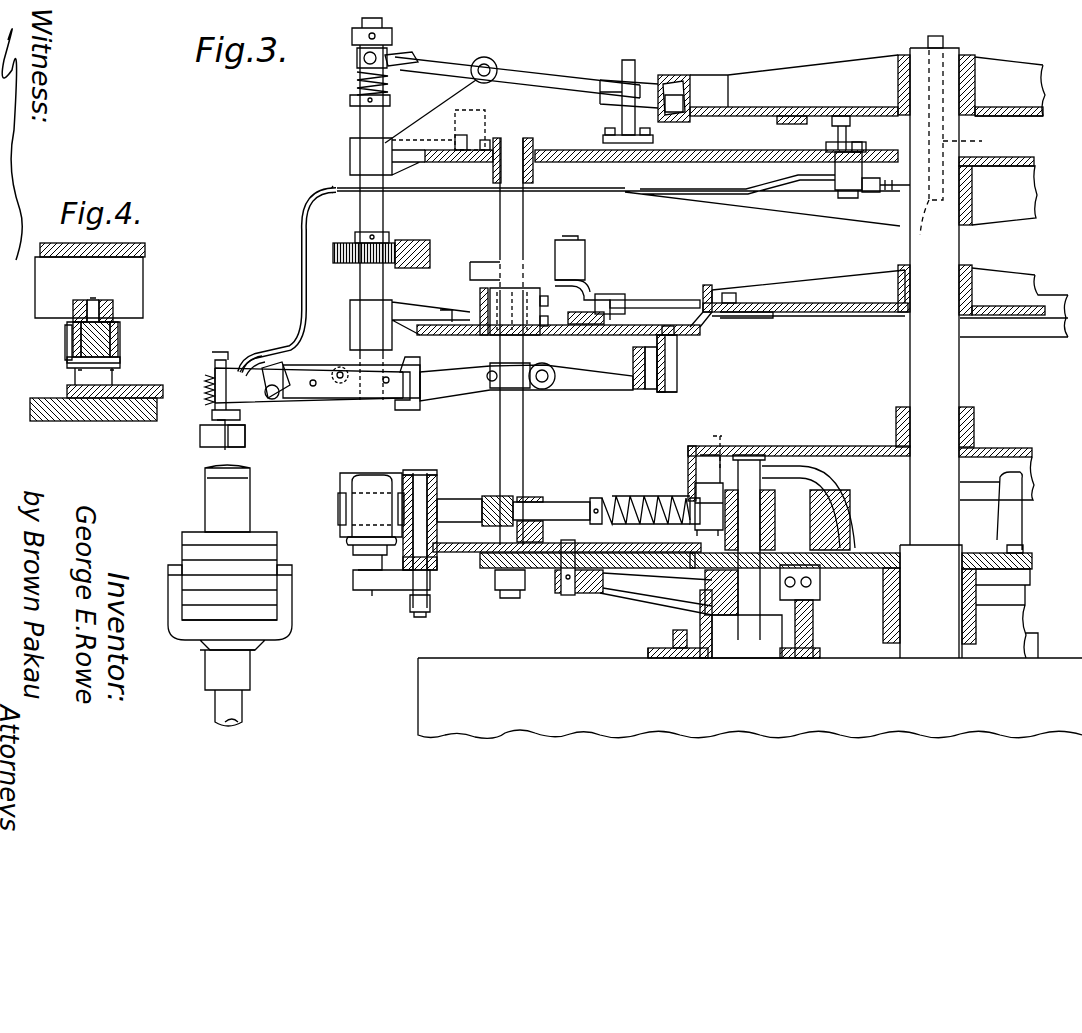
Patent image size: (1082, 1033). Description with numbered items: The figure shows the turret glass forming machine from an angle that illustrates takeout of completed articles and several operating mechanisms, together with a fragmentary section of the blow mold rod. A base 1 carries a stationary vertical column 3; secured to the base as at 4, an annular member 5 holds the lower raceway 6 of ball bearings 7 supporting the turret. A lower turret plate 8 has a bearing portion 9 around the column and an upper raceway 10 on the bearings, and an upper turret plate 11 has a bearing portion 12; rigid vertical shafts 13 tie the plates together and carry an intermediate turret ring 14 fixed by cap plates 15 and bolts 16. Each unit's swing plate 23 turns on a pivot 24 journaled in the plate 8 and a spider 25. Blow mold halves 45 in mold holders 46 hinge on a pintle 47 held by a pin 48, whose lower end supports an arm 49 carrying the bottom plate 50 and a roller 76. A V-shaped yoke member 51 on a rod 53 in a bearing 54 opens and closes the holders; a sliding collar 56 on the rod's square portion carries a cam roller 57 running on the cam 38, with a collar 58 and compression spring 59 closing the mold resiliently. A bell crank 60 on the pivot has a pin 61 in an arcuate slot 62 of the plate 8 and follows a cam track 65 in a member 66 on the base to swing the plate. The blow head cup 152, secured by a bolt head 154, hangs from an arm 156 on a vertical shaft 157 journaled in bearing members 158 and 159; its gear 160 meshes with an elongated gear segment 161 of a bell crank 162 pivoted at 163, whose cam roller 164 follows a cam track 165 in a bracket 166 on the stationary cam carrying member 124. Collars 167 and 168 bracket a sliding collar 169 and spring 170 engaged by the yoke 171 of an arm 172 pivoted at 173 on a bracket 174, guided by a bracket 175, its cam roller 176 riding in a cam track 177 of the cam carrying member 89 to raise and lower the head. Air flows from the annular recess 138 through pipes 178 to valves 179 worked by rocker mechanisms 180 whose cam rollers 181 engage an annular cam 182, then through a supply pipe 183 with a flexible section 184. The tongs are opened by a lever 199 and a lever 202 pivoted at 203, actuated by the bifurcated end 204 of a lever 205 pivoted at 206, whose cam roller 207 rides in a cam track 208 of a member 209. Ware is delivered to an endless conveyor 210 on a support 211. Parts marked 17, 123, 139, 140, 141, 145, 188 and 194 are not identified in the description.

In FIG. 3, the base 1 is at (416, 692).
In FIG. 3, the stationary vertical column 3 is at (948, 388).
In FIG. 3, the securing point 4 is at (723, 444).
In FIG. 3, the annular member 5 is at (820, 652).
In FIG. 3, the lower raceway 6 is at (813, 610).
In FIG. 3, the ball bearings 7 is at (784, 600).
In FIG. 4, the lower turret plate 8 is at (95, 421).
In FIG. 3, the lower turret plate 8 is at (1020, 560).
In FIG. 3, the bearing portion 9 is at (977, 622).
In FIG. 3, the upper raceway 10 is at (790, 570).
In FIG. 3, the upper turret plate 11 is at (578, 150).
In FIG. 3, the bearing portion 12 is at (977, 222).
In FIG. 3, the rigid vertical shafts 13 is at (520, 437).
In FIG. 3, the intermediate turret ring 14 is at (676, 296).
In FIG. 3, the cap plates 15 is at (506, 336).
In FIG. 3, the bolts 16 is at (548, 322).
In FIG. 3, the lower bracket 17 is at (476, 570).
In FIG. 4, the swing plate 23 is at (140, 388).
In FIG. 3, the swing plate 23 is at (614, 508).
In FIG. 3, the vertical axis pivot 24 is at (752, 616).
In FIG. 3, the spider 25 is at (805, 470).
In FIG. 4, the cam 38 is at (132, 300).
In FIG. 3, the cam 38 is at (690, 465).
In FIG. 3, the blow mold halves 45 is at (348, 476).
In FIG. 3, the mold holders 46 is at (340, 506).
In FIG. 3, the pintle 47 is at (420, 480).
In FIG. 3, the pin 48 is at (430, 570).
In FIG. 3, the arm 49 is at (395, 596).
In FIG. 3, the bottom plate 50 is at (358, 560).
In FIG. 3, the V-shaped yoke member 51 is at (452, 502).
In FIG. 4, the rod 53 is at (78, 370).
In FIG. 3, the rod 53 is at (548, 504).
In FIG. 4, the bearing 54 is at (120, 330).
In FIG. 3, the bearing 54 is at (524, 496).
In FIG. 4, the sliding collar 56 is at (72, 335).
In FIG. 3, the sliding collar 56 is at (690, 500).
In FIG. 4, the cam roller 57 is at (100, 305).
In FIG. 3, the cam roller 57 is at (722, 462).
In FIG. 3, the collar 58 is at (596, 496).
In FIG. 3, the compression spring 59 is at (640, 496).
In FIG. 3, the bell crank 60 is at (640, 592).
In FIG. 3, the upstanding pin 61 is at (576, 540).
In FIG. 3, the arcuate slot 62 is at (540, 572).
In FIG. 3, the cam track 65 is at (686, 630).
In FIG. 3, the member 66 is at (676, 660).
In FIG. 3, the rollers 76 is at (430, 612).
In FIG. 3, the cam carrying member 89 is at (795, 78).
In FIG. 3, the bolt 123 is at (700, 296).
In FIG. 3, the stationary cam carrying member 124 is at (818, 300).
In FIG. 3, the annular recess 138 is at (975, 192).
In FIG. 3, the passage 139 is at (920, 235).
In FIG. 3, the passage 140 is at (978, 143).
In FIG. 3, the plug 141 is at (943, 40).
In FIG. 3, the pad 145 is at (785, 125).
In FIG. 3, the cup shaped member 152 is at (240, 435).
In FIG. 3, the bolt head 154 is at (218, 360).
In FIG. 3, the arm 156 is at (292, 402).
In FIG. 3, the vertical shaft 157 is at (378, 222).
In FIG. 3, the upper bearing member 158 is at (350, 156).
In FIG. 3, the lower bearing member 159 is at (350, 306).
In FIG. 3, the gear 160 is at (336, 246).
In FIG. 3, the gear segment 161 is at (428, 252).
In FIG. 3, the bell crank 162 is at (535, 265).
In FIG. 3, the pivot 163 is at (580, 246).
In FIG. 3, the cam roller 164 is at (594, 296).
In FIG. 3, the cam track 165 is at (588, 325).
In FIG. 3, the bracket 166 is at (650, 300).
In FIG. 3, the collar 167 is at (356, 30).
In FIG. 3, the collar 168 is at (350, 108).
In FIG. 3, the sliding collar 169 is at (357, 56).
In FIG. 3, the compression spring 170 is at (388, 86).
In FIG. 3, the yoke portion 171 is at (400, 56).
In FIG. 3, the arm 172 is at (540, 78).
In FIG. 3, the pivot 173 is at (488, 58).
In FIG. 3, the bracket 174 is at (485, 118).
In FIG. 3, the bracket 175 is at (635, 70).
In FIG. 3, the cam roller 176 is at (670, 85).
In FIG. 3, the cam track 177 is at (672, 118).
In FIG. 3, the pipes 178 is at (875, 195).
In FIG. 3, the pressure controlling valves 179 is at (835, 195).
In FIG. 3, the rocker mechanisms 180 is at (826, 146).
In FIG. 3, the cam rollers 181 is at (866, 146).
In FIG. 3, the annular cam 182 is at (845, 116).
In FIG. 3, the pressure supply pipe 183 is at (740, 190).
In FIG. 3, the flexible section 184 is at (304, 280).
In FIG. 3, the block 188 is at (210, 440).
In FIG. 3, the spring 194 is at (206, 392).
In FIG. 3, the lever 199 is at (256, 360).
In FIG. 3, the lever 202 is at (325, 370).
In FIG. 3, the pivot 203 is at (350, 382).
In FIG. 3, the bifurcated end 204 is at (412, 410).
In FIG. 3, the lever 205 is at (452, 392).
In FIG. 3, the pivot 206 is at (547, 388).
In FIG. 3, the cam roller 207 is at (640, 392).
In FIG. 3, the cam track 208 is at (678, 362).
In FIG. 3, the member 209 is at (674, 393).
In FIG. 3, the endless conveyor 210 is at (250, 540).
In FIG. 3, the support 211 is at (242, 706).